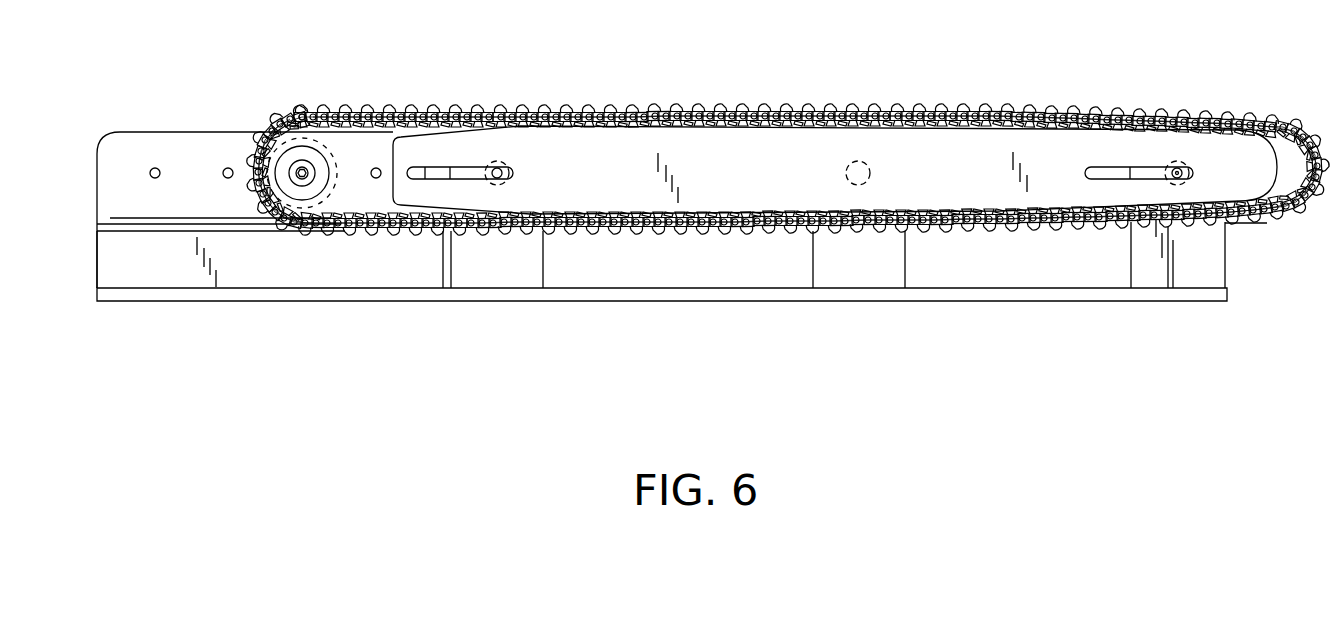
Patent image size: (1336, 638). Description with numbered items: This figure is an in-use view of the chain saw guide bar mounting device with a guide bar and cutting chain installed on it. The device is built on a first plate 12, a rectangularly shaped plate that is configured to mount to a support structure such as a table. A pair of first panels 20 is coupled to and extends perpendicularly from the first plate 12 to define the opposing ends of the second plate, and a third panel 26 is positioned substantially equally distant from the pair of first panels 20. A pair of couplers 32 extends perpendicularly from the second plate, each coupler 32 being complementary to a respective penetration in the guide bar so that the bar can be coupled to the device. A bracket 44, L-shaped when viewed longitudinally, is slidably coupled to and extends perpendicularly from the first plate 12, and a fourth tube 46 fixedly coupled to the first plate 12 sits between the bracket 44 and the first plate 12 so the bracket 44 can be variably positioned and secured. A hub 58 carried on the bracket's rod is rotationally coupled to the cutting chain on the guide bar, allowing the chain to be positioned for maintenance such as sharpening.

The first plate 12 is at (243, 295).
The first panel 20 is at (1143, 270).
The third panel 26 is at (850, 265).
The coupler 32 is at (1165, 173).
The bracket 44 is at (222, 146).
The fourth tube 46 is at (120, 263).
The hub 58 is at (316, 163).